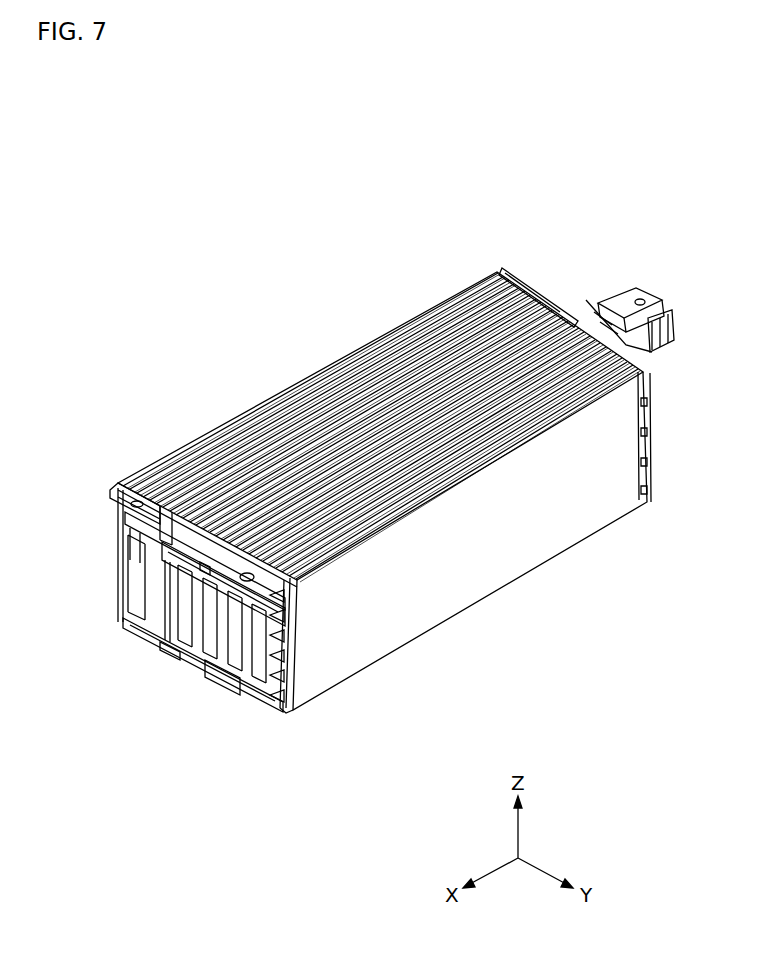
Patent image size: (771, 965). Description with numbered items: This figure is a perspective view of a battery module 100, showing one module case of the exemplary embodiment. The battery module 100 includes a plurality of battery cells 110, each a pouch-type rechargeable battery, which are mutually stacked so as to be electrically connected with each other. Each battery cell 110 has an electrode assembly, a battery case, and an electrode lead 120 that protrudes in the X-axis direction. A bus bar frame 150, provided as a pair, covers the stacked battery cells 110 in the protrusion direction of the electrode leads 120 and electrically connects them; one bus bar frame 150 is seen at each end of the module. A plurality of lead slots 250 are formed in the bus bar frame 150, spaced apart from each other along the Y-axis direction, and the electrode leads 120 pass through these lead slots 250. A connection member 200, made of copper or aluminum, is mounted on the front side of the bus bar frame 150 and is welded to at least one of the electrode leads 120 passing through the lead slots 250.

The battery module 100 is at (257, 302).
The battery cell 110 is at (355, 333).
The electrode lead 120 is at (147, 597).
The bus bar frame 150 is at (560, 287).
The connection member 200 is at (121, 489).
The lead slot 250 is at (120, 553).